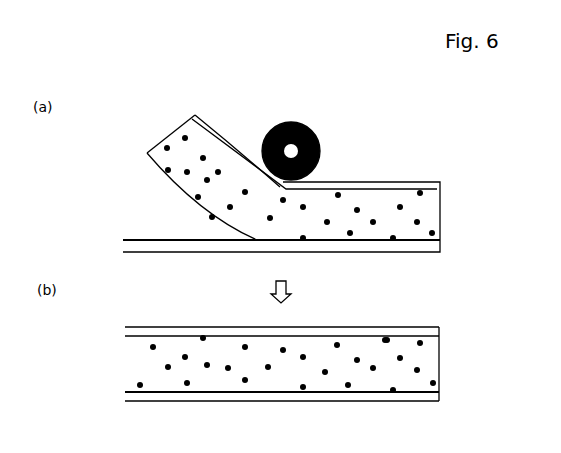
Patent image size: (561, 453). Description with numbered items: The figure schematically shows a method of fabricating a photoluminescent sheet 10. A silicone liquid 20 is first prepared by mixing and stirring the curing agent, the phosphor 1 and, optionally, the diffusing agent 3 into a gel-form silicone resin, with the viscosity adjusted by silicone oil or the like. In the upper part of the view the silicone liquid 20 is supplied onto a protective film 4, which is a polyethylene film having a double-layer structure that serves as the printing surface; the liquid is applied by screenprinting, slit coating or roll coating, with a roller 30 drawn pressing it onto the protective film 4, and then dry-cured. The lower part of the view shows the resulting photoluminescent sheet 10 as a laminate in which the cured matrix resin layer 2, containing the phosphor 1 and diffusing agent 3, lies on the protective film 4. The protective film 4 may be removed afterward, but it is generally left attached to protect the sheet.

The phosphor 1 is at (424, 344).
The matrix resin layer 2 is at (441, 372).
The diffusing agent 3 is at (446, 394).
The protective film 4 is at (385, 192).
The photoluminescent sheet 10 is at (447, 404).
The silicone liquid 20 is at (120, 151).
The pressure roller 30 is at (299, 122).